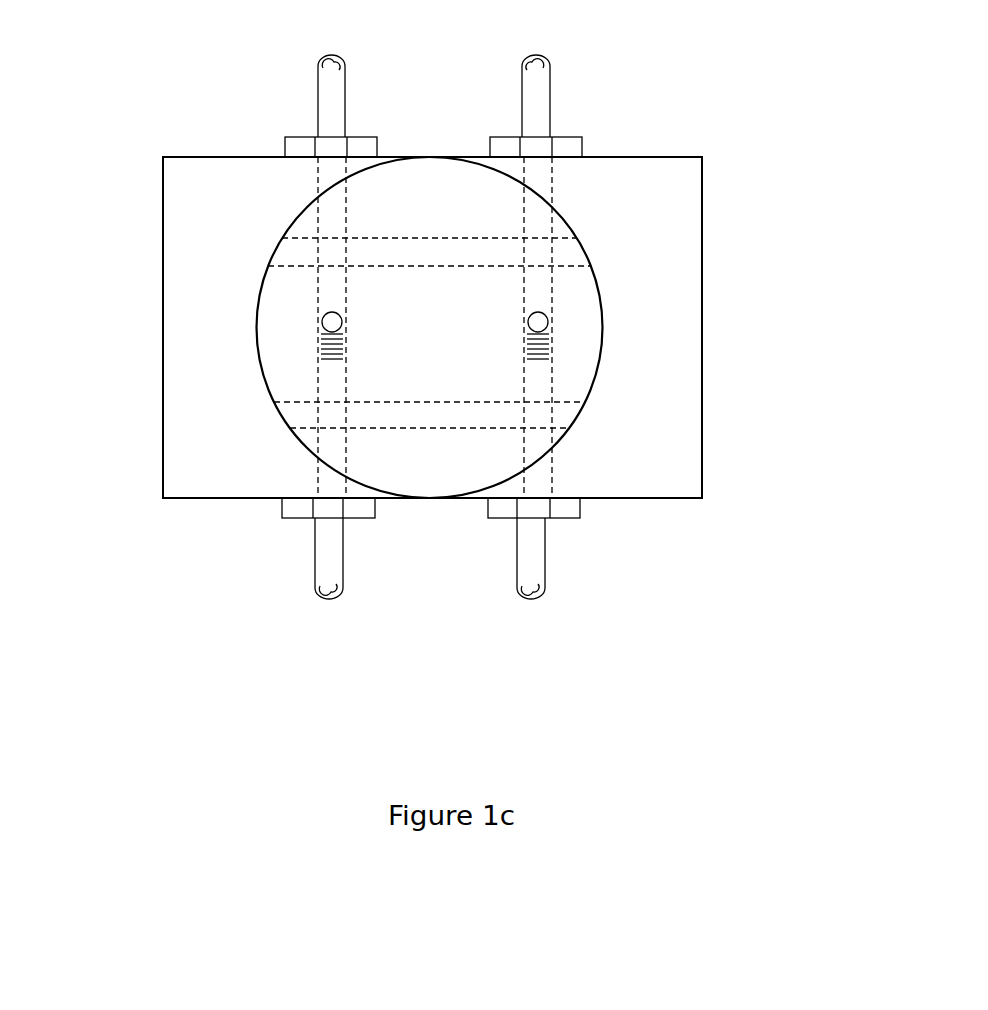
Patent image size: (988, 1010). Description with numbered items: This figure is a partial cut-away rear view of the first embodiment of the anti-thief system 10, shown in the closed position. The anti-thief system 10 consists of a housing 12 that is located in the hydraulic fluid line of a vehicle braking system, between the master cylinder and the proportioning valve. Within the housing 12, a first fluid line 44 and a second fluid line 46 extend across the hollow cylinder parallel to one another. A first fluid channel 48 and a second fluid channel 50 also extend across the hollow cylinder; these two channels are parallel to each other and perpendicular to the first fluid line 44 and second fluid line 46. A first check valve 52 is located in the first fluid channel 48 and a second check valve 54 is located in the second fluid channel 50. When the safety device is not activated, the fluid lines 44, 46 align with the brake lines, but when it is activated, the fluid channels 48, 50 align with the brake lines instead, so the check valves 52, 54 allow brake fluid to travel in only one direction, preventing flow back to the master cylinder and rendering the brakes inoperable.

The anti-thief system 10 is at (168, 70).
The housing 12 is at (675, 332).
The first fluid line 44 is at (437, 250).
The second fluid line 46 is at (433, 415).
The first fluid channel 48 is at (567, 220).
The second fluid channel 50 is at (332, 179).
The first check valve 52 is at (540, 347).
The second check valve 54 is at (322, 347).